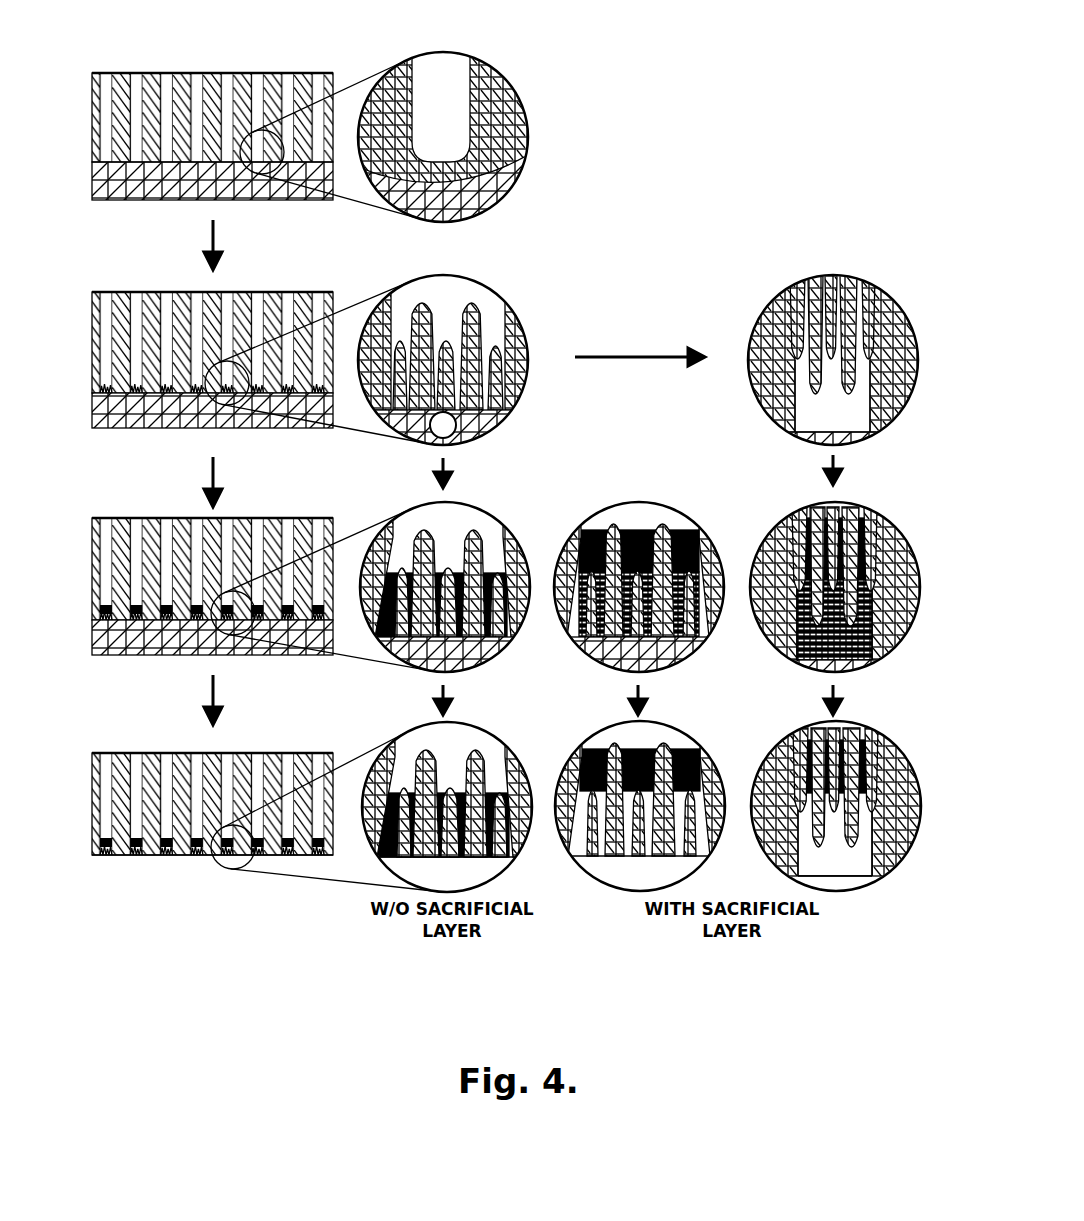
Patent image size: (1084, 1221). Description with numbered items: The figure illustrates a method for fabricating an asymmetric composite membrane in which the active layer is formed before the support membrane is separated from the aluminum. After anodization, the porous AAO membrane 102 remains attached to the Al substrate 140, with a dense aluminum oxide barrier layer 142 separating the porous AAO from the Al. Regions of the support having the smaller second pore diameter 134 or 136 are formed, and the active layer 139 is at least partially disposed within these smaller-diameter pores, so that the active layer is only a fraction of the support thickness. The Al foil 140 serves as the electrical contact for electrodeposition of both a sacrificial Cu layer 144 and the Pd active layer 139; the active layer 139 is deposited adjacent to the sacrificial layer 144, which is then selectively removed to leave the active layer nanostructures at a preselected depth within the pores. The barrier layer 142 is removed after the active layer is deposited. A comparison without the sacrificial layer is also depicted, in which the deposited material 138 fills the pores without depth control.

The AAO membrane 102 is at (400, 95).
The dense aluminum oxide layer 142 is at (447, 172).
The Al substrate 140 is at (178, 187).
The smaller pore diameter layer 134 is at (480, 320).
The smaller second pore diameter region 136 is at (805, 340).
The deposited material without sacrificial layer 138 is at (498, 575).
The active layer 139 is at (788, 533).
The sacrificial layer 144 is at (800, 623).